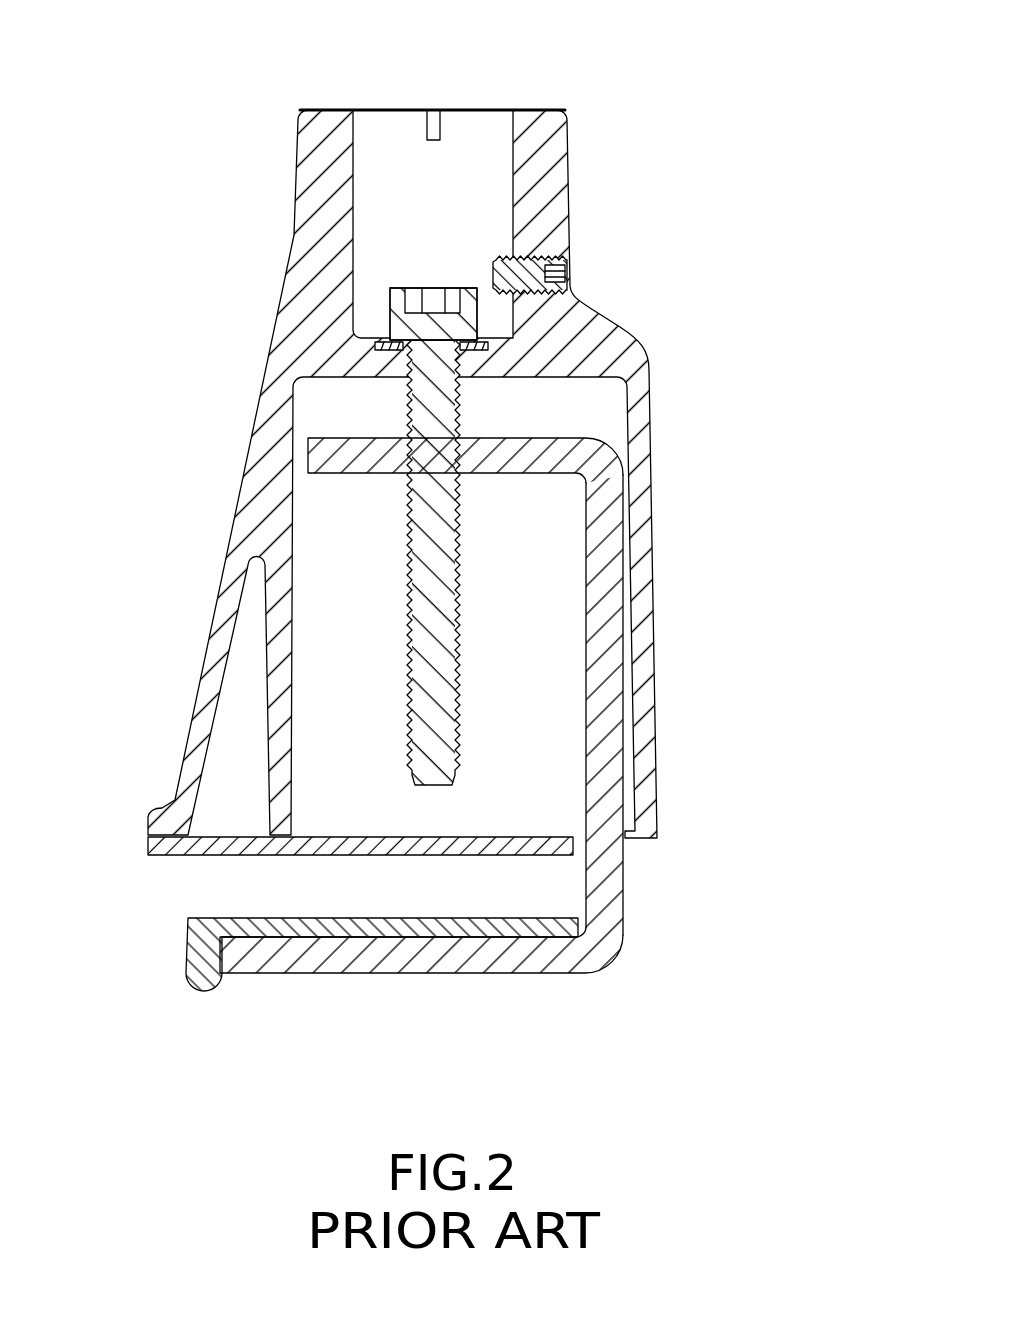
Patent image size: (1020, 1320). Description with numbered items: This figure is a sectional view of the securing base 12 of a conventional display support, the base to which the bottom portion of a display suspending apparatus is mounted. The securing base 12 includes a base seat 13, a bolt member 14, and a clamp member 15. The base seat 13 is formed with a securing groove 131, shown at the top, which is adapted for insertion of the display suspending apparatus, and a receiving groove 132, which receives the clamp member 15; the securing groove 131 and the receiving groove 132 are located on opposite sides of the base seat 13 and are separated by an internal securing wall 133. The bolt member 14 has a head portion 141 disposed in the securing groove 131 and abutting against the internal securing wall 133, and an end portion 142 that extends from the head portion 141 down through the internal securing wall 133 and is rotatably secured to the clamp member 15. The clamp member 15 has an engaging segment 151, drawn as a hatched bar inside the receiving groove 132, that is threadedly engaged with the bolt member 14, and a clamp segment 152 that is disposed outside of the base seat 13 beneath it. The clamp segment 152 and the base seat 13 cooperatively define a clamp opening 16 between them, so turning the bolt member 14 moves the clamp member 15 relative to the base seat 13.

The securing base 12 is at (553, 160).
The base seat 13 is at (440, 442).
The securing groove 131 is at (477, 148).
The receiving groove 132 is at (588, 406).
The internal securing wall 133 is at (380, 368).
The bolt member 14 is at (498, 498).
The head portion 141 is at (396, 291).
The end portion 142 is at (433, 668).
The clamp member 15 is at (480, 762).
The engaging segment 151 is at (522, 468).
The clamp segment 152 is at (500, 968).
The clamp opening 16 is at (208, 886).